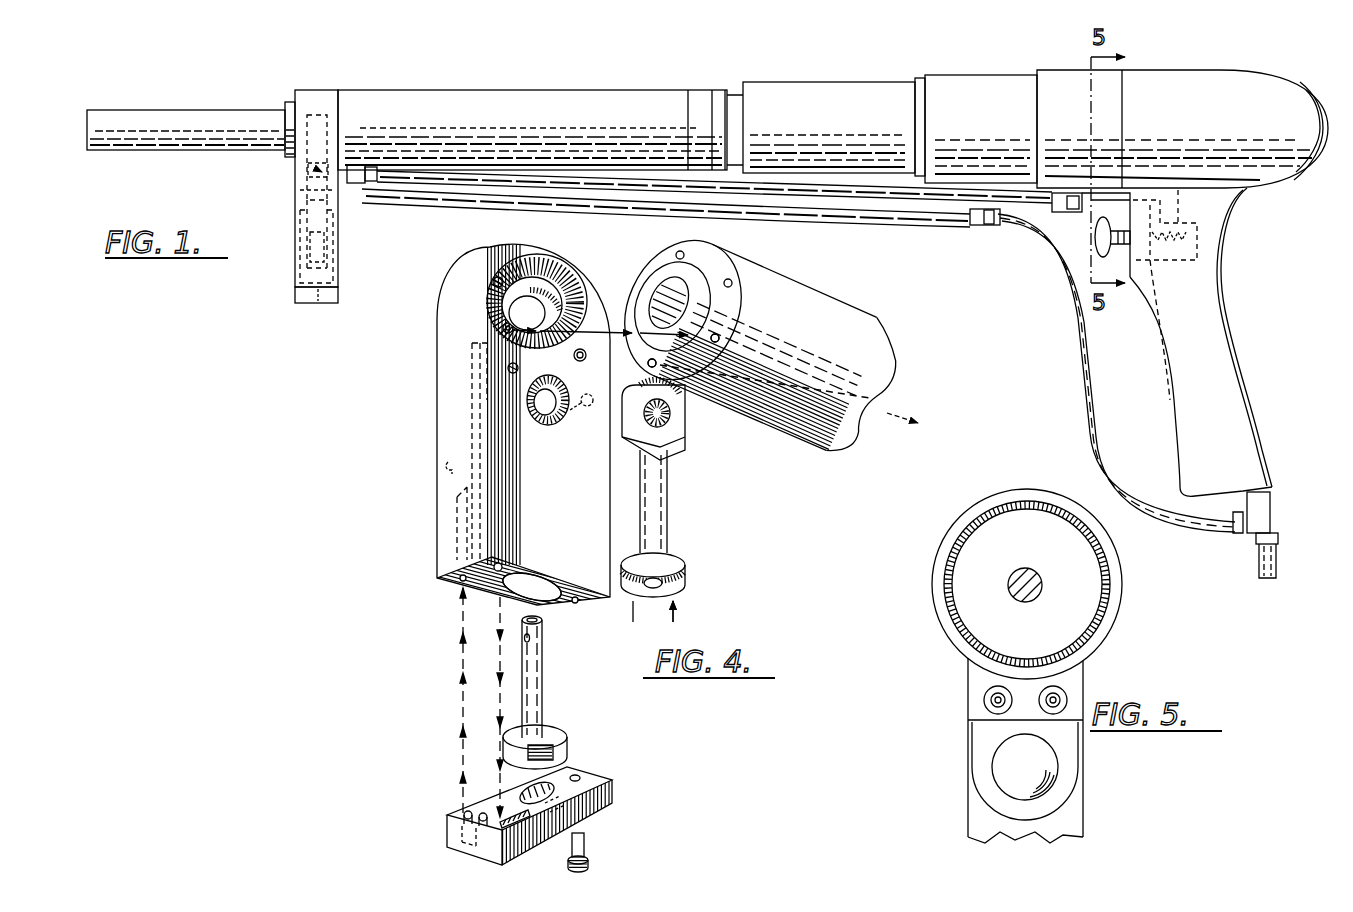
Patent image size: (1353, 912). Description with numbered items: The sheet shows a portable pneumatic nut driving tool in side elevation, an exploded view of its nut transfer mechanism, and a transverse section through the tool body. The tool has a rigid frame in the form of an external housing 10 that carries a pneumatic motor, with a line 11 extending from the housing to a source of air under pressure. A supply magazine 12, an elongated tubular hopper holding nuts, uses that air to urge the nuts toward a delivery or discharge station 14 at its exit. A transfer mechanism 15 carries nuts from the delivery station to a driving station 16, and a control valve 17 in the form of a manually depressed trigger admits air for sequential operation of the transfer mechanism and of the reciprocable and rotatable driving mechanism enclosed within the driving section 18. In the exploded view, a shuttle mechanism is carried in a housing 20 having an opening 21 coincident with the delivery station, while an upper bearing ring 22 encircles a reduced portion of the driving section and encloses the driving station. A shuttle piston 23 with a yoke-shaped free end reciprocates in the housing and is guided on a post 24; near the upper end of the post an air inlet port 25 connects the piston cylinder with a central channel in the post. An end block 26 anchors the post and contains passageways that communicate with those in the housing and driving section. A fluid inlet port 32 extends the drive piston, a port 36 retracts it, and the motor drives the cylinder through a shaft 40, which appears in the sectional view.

In FIG. 1, the external housing 10 is at (958, 72).
In FIG. 5, the external housing 10 is at (968, 500).
In FIG. 1, the line 11 is at (1278, 568).
In FIG. 1, the supply magazine 12 is at (863, 226).
In FIG. 1, the delivery or discharge station 14 is at (304, 190).
In FIG. 4, the delivery or discharge station 14 is at (556, 418).
In FIG. 1, the transfer mechanism 15 is at (297, 272).
In FIG. 4, the transfer mechanism 15 is at (582, 545).
In FIG. 1, the driving station 16 is at (290, 126).
In FIG. 4, the driving station 16 is at (520, 304).
In FIG. 1, the control valve 17 is at (1170, 262).
In FIG. 5, the control valve 17 is at (992, 767).
In FIG. 1, the driving section 18 is at (517, 88).
In FIG. 4, the driving section 18 is at (892, 338).
In FIG. 4, the housing 20 is at (436, 458).
In FIG. 4, the opening 21 is at (547, 418).
In FIG. 1, the upper bearing ring 22 is at (330, 92).
In FIG. 4, the upper bearing ring 22 is at (566, 257).
In FIG. 1, the shuttle piston 23 is at (308, 170).
In FIG. 4, the shuttle piston 23 is at (660, 505).
In FIG. 1, the post 24 is at (306, 247).
In FIG. 4, the post 24 is at (545, 682).
In FIG. 4, the air inlet port 25 is at (531, 638).
In FIG. 1, the end block 26 is at (311, 304).
In FIG. 4, the end block 26 is at (590, 810).
In FIG. 4, the fluid inlet port 32 is at (721, 338).
In FIG. 4, the port 36 is at (658, 368).
In FIG. 5, the shaft 40 is at (1020, 573).